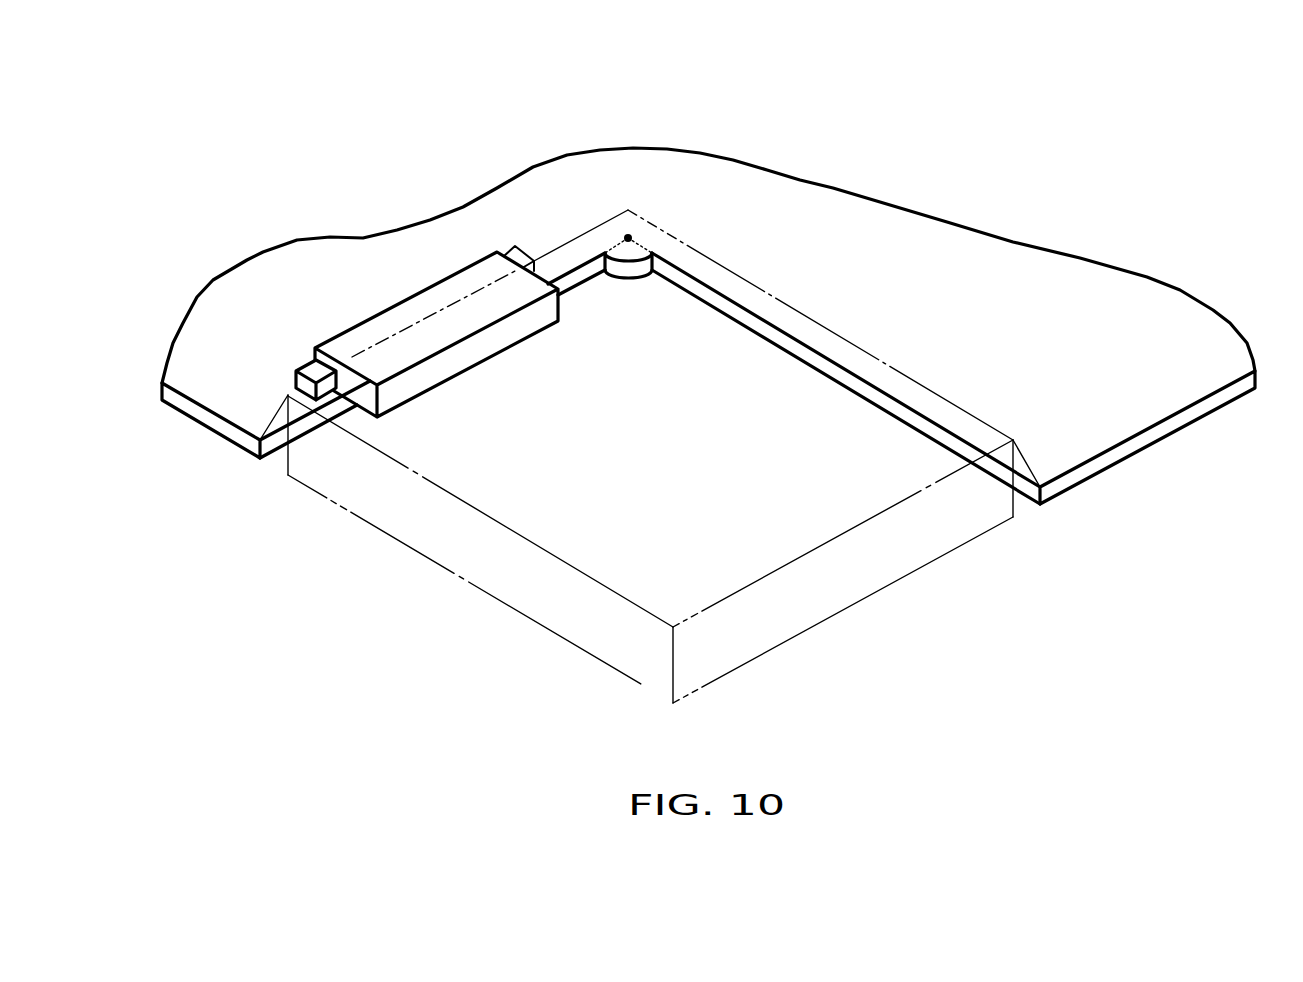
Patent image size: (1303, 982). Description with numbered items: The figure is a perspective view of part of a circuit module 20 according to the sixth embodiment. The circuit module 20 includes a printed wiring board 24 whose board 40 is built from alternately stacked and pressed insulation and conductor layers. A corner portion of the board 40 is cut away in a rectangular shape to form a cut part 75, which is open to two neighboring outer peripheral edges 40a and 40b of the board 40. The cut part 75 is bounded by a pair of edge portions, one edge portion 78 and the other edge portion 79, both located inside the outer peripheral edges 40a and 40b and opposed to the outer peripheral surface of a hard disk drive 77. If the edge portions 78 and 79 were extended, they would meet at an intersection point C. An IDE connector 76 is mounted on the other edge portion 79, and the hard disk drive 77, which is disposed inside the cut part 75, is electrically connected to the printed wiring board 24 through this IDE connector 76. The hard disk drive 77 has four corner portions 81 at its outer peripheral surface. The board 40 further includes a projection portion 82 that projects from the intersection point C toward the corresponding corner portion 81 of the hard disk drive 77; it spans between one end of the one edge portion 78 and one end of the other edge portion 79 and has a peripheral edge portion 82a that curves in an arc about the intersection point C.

The circuit module 20 is at (358, 120).
The printed wiring board 24 is at (719, 172).
The board 40 is at (920, 227).
The outer peripheral edge 40a is at (217, 422).
The outer peripheral edge 40b is at (1120, 450).
The cut part 75 is at (856, 374).
The IDE connector 76 is at (372, 325).
The hard disk drive 77 is at (782, 655).
The one edge portion 78 is at (906, 412).
The other edge portion 79 is at (277, 437).
The corner portion 81 is at (628, 205).
The projection portion 82 is at (625, 270).
The peripheral edge portion 82a is at (646, 270).
The intersection point C is at (626, 236).